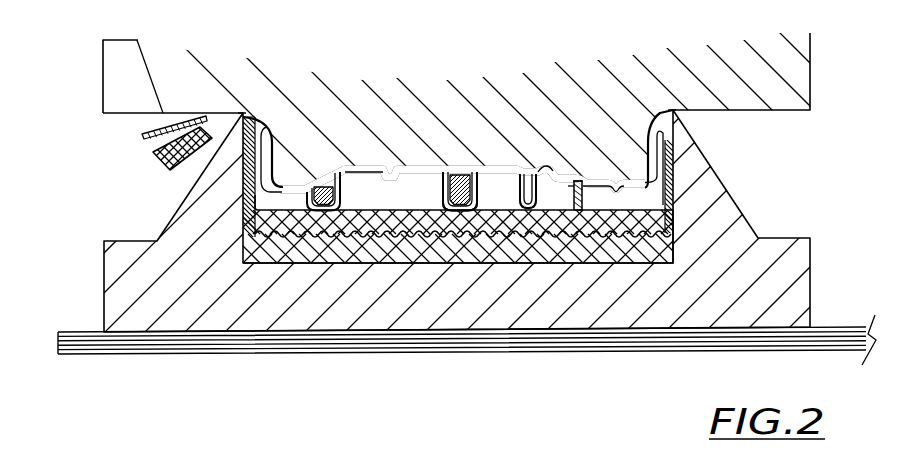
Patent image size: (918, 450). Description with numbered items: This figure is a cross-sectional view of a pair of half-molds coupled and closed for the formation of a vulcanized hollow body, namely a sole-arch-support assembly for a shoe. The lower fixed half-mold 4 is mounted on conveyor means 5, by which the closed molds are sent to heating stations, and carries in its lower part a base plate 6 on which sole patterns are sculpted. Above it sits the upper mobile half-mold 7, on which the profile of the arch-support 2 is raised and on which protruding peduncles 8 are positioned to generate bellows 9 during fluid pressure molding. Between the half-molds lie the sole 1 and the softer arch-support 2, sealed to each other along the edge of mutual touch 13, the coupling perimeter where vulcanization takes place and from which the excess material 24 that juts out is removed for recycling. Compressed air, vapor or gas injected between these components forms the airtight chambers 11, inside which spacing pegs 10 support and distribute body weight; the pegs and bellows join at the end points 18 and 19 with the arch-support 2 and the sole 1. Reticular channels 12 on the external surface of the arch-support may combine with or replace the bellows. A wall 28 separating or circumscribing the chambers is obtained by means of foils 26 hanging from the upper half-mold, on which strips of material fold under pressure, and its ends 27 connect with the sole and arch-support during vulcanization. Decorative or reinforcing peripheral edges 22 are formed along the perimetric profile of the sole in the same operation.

The sole 1 is at (277, 265).
The arch-support 2 is at (415, 166).
The lower fixed half-mold 4 is at (117, 267).
The conveyor means 5 is at (840, 340).
The base plate 6 is at (257, 257).
The upper mobile half-mold 7 is at (112, 78).
The protruding peduncles 8 is at (463, 170).
The bellows 9 is at (528, 160).
The spacing pegs 10 is at (580, 177).
The airtight chambers 11 is at (363, 187).
The reticular channels 12 is at (395, 180).
The edge of mutual touch 13 is at (233, 107).
The end points 18 is at (523, 170).
The end points 19 is at (321, 226).
The peripheral edges 22 is at (247, 190).
The excess material 24 is at (163, 165).
The foils 26 is at (630, 183).
The ends 27 is at (570, 190).
The wall 28 is at (579, 226).